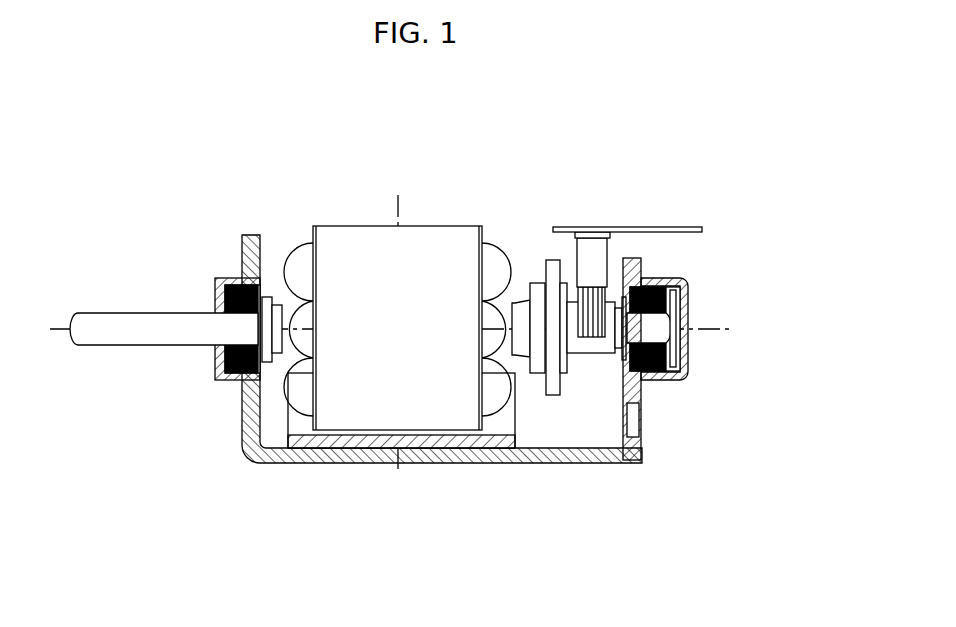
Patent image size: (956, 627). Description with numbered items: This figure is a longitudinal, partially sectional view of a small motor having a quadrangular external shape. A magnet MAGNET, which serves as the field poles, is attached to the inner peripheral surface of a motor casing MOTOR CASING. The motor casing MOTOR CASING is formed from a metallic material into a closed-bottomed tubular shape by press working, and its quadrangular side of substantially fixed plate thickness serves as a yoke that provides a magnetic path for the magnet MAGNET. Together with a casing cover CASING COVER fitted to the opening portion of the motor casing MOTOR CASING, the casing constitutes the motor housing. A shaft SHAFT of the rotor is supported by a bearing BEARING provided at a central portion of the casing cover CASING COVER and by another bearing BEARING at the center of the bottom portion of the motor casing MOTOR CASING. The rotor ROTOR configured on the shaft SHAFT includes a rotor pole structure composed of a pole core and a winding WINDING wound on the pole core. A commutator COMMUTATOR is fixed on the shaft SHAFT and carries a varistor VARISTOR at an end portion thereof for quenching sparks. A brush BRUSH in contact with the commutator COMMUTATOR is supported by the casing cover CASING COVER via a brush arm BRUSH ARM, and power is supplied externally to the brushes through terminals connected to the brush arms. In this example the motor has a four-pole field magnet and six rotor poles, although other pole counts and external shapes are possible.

The shaft SHAFT is at (133, 340).
The bearing BEARING is at (229, 279).
The winding WINDING is at (300, 262).
The rotor ROTOR is at (362, 242).
The varistor VARISTOR is at (551, 262).
The brush arm BRUSH ARM is at (598, 252).
The casing cover CASING COVER is at (642, 385).
The magnet MAGNET is at (308, 447).
The motor casing MOTOR CASING is at (372, 463).
The brush BRUSH is at (582, 338).
The commutator COMMUTATOR is at (593, 347).